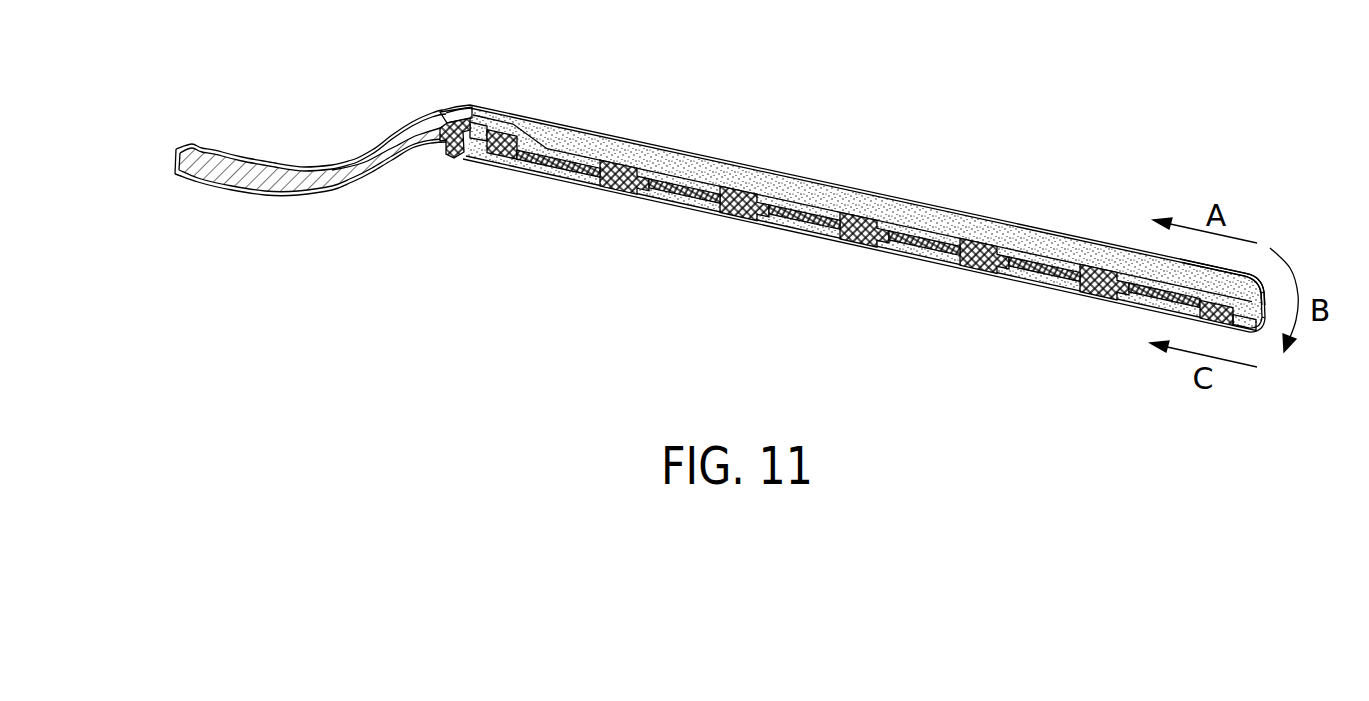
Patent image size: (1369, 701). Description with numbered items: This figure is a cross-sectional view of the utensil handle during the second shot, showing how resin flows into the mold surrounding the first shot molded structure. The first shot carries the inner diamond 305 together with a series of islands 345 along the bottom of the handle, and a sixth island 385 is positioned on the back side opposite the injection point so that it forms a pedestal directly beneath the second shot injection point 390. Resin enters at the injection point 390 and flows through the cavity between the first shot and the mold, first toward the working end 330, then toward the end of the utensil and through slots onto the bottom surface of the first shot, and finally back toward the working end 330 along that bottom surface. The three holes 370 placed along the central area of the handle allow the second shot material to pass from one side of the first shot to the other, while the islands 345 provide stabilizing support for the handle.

The inner diamond 305 is at (500, 131).
The working end 330 is at (247, 193).
The islands 345 is at (612, 192).
The holes 370 is at (705, 199).
The sixth island 385 is at (1224, 327).
The second shot injection point 390 is at (1226, 283).